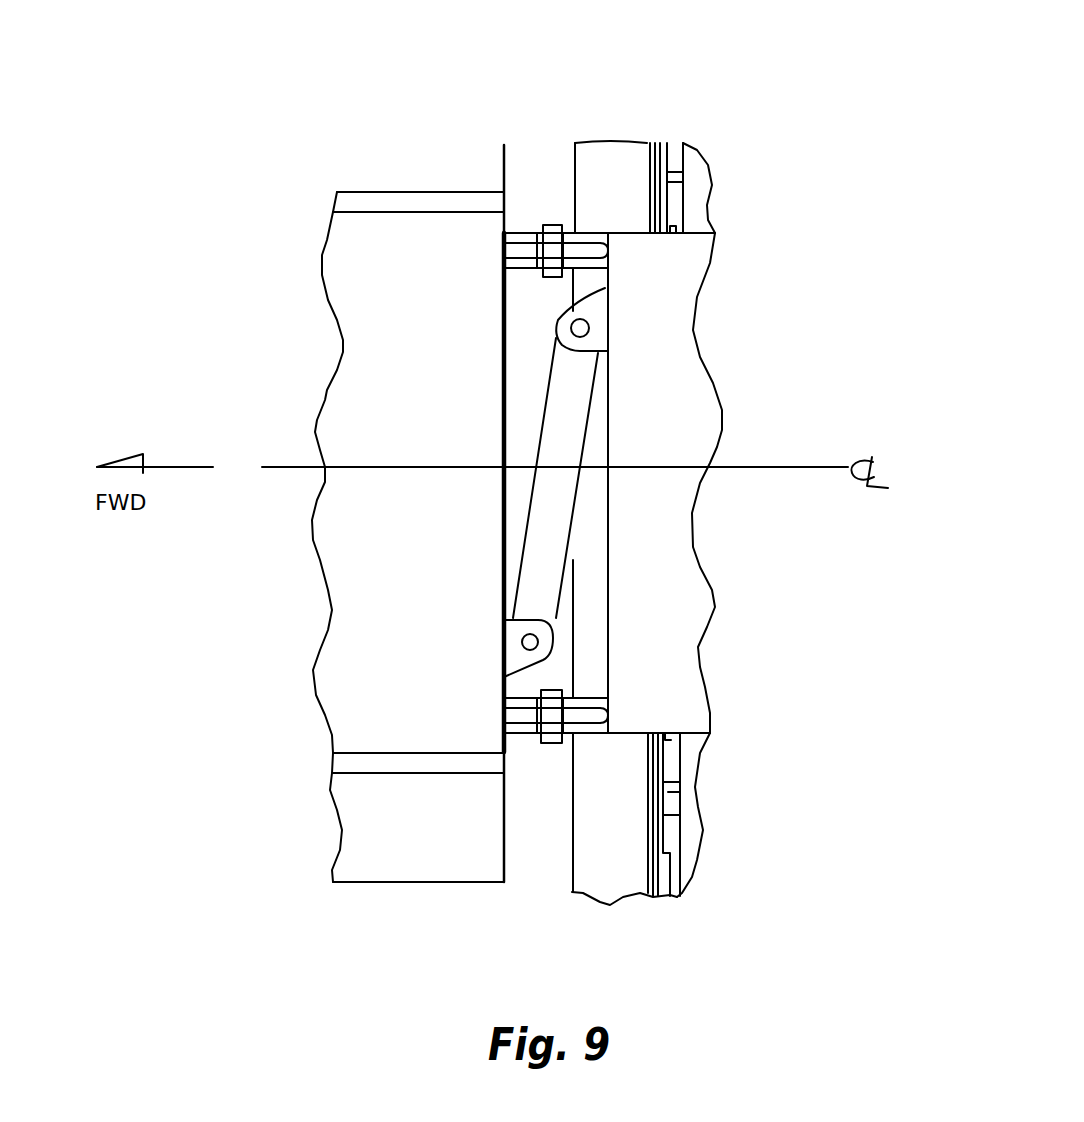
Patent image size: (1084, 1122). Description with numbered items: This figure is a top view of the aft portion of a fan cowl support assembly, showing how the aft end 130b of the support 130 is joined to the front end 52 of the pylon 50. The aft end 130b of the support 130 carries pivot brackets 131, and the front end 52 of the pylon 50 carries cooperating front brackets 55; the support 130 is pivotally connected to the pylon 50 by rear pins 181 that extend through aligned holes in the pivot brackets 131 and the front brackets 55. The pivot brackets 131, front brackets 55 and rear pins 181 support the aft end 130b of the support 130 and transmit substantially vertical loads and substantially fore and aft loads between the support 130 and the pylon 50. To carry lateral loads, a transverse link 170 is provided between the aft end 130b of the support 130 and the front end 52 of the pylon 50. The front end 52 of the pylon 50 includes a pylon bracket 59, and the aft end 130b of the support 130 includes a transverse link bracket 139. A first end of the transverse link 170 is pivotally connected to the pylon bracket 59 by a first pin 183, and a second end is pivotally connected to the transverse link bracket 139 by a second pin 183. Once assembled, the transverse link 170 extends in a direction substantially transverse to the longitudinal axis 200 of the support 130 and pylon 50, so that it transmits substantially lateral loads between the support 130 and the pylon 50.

The pylon 50 is at (700, 357).
The front end of the pylon 52 is at (662, 428).
The front brackets 55 is at (583, 233).
The pylon bracket 59 is at (590, 313).
The support 130 is at (363, 882).
The aft end of the support 130b is at (482, 512).
The pivot brackets 131 is at (519, 243).
The transverse link bracket 139 is at (545, 630).
The transverse link 170 is at (557, 497).
The rear pins 181 is at (557, 225).
The pins 183 is at (571, 328).
The longitudinal axis 200 is at (787, 467).